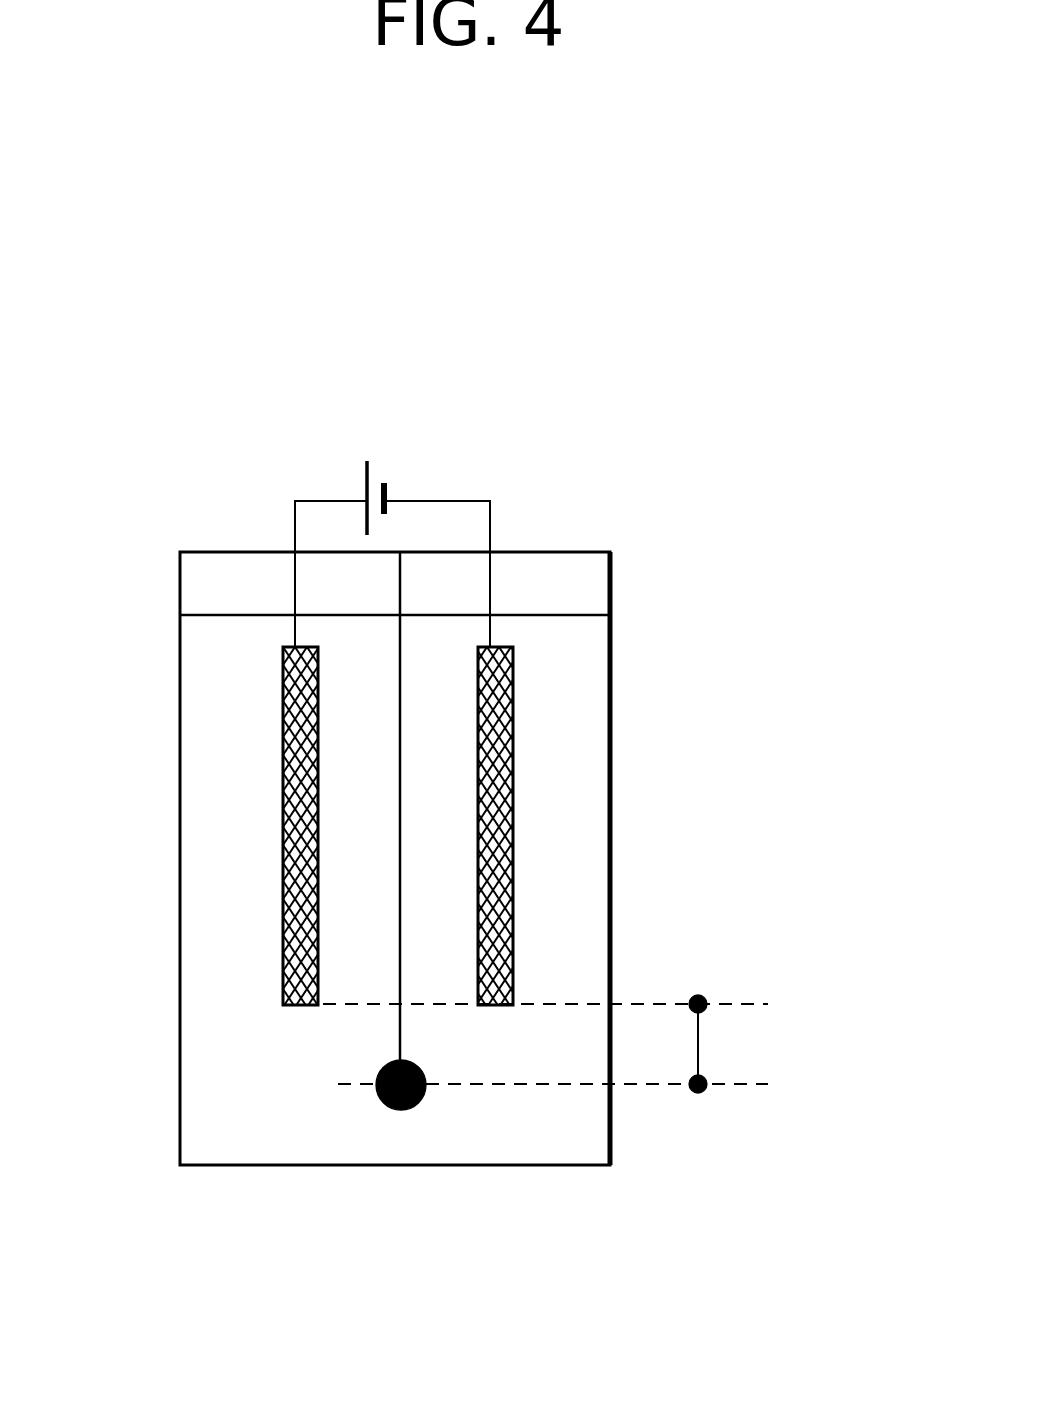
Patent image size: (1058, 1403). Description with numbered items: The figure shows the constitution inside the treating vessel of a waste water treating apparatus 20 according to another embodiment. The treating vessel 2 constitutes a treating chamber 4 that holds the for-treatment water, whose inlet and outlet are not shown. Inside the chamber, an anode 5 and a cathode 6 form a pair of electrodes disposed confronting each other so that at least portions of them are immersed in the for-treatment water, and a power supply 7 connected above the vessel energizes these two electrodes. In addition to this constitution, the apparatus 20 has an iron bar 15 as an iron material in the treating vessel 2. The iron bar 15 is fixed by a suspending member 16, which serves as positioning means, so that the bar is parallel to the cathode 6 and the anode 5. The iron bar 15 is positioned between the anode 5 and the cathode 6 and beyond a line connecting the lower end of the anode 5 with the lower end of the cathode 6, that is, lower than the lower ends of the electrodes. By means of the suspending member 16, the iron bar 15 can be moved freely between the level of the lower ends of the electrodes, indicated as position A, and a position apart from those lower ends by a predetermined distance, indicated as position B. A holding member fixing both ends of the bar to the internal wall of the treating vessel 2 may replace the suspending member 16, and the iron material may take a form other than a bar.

The treating vessel 2 is at (612, 827).
The treating chamber 4 is at (585, 693).
The anode 5 is at (297, 1008).
The cathode 6 is at (493, 1008).
The power supply 7 is at (366, 477).
The iron bar 15 is at (402, 1110).
The suspending member 16 is at (400, 733).
The waste water treating apparatus 20 is at (635, 480).
The position A is at (545, 980).
The position B is at (553, 1065).